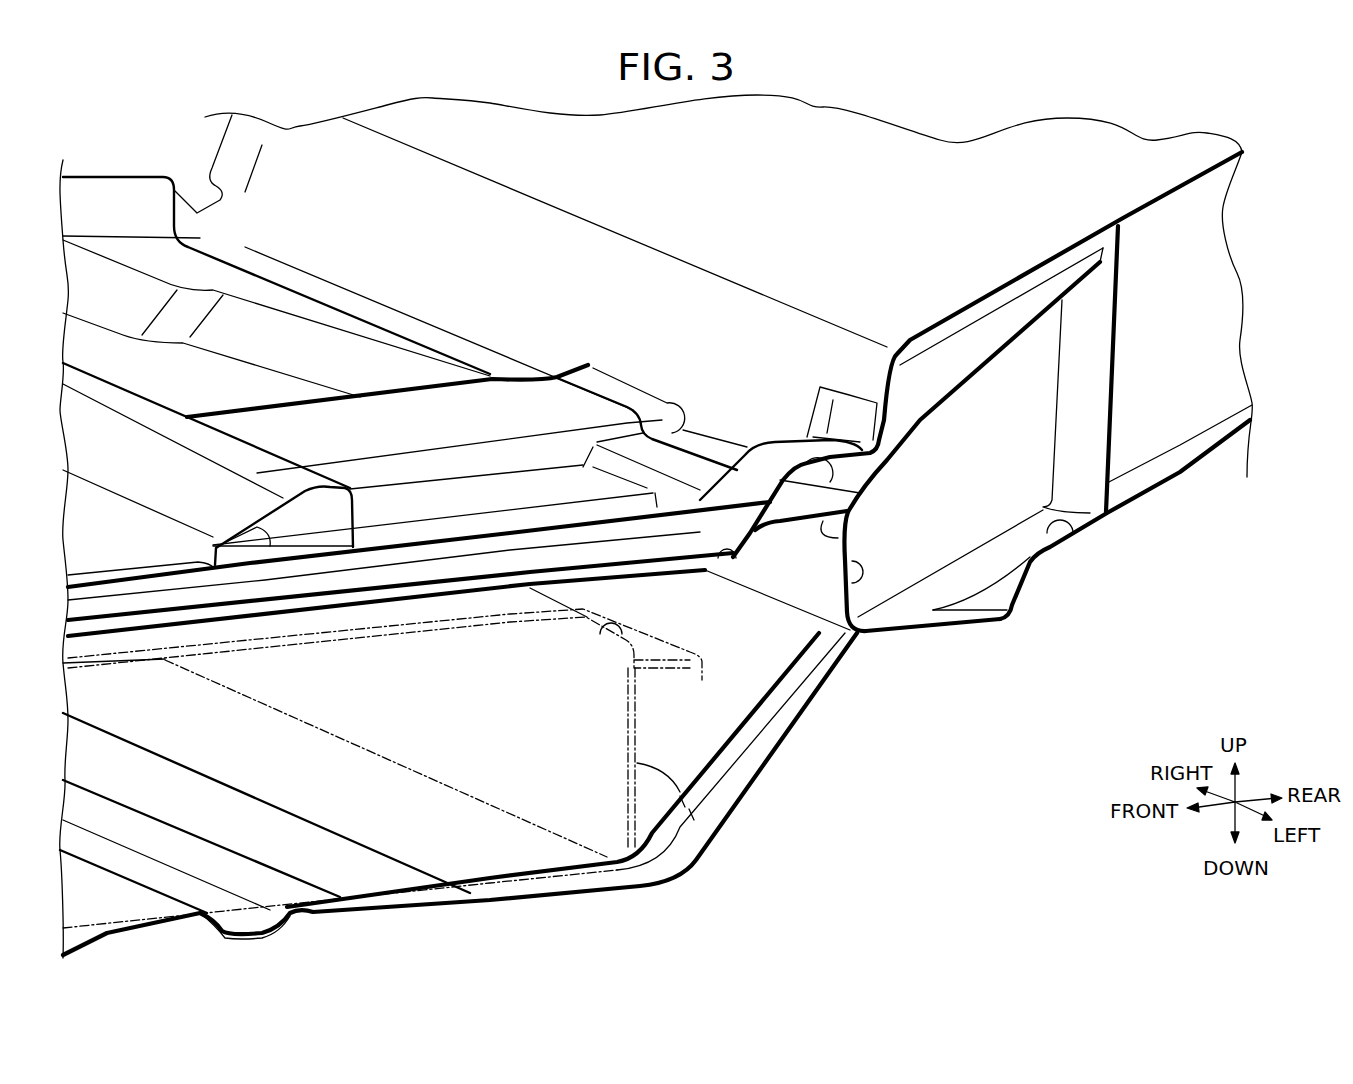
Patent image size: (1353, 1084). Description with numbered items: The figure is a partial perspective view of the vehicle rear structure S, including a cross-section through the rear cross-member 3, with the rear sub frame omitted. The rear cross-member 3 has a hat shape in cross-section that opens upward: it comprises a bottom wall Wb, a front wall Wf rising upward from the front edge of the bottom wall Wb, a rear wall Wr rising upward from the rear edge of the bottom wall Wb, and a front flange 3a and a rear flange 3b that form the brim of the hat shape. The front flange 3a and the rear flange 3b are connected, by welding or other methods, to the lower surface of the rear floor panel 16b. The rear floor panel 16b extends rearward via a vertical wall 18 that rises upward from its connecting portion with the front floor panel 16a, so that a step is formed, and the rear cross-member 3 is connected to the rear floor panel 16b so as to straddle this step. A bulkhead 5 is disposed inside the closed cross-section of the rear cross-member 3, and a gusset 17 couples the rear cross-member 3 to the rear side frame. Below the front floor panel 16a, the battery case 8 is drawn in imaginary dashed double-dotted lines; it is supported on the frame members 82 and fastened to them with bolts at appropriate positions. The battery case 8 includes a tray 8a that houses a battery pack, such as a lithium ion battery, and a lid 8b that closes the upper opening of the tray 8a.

The rear cross-member 3 is at (1091, 528).
The front flange 3a is at (973, 439).
The rear flange 3b is at (1042, 366).
The bulkhead 5 is at (974, 498).
The battery case 8 is at (458, 771).
The tray 8a is at (458, 794).
The lid 8b is at (382, 722).
The front floor panel 16a is at (655, 397).
The rear floor panel 16b is at (594, 328).
The gusset 17 is at (1179, 463).
The vertical wall 18 is at (475, 326).
The frame members 82 is at (266, 937).
The front wall Wf is at (805, 571).
The rear wall Wr is at (1135, 384).
The bottom wall Wb is at (1109, 565).
The vehicle rear structure S is at (983, 769).